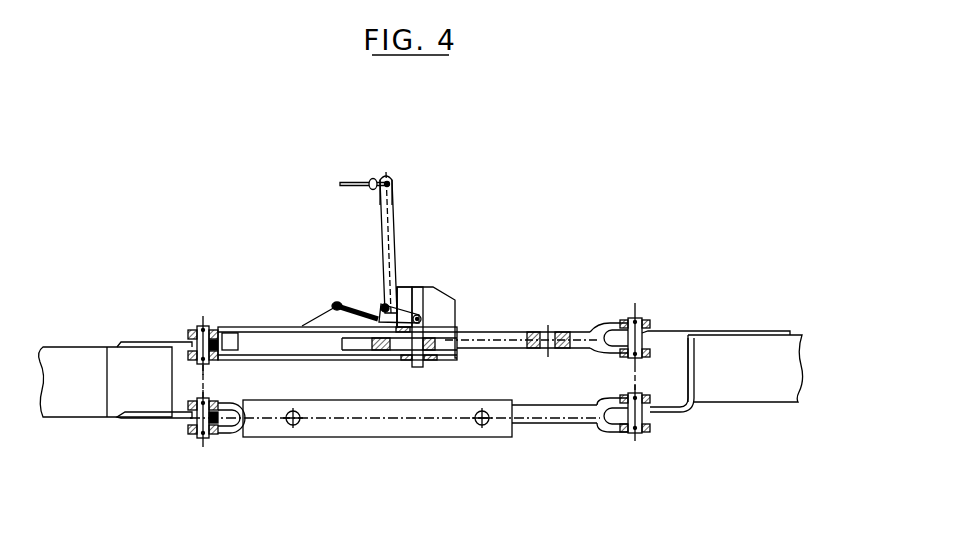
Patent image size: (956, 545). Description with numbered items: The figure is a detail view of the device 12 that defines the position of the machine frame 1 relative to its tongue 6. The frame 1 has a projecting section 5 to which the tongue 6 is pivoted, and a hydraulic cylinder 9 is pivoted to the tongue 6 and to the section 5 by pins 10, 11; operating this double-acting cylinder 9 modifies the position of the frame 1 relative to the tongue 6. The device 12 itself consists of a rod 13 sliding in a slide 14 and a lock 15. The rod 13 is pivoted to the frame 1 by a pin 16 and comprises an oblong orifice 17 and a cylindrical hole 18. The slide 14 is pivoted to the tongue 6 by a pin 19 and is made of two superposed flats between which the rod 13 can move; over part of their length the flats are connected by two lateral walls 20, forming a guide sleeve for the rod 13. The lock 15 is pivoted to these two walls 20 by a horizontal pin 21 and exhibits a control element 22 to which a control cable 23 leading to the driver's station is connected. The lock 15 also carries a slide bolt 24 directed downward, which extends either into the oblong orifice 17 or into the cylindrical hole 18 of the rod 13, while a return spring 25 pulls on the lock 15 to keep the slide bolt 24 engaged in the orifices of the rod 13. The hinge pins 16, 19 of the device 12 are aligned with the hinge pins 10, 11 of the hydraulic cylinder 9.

The frame 1 is at (711, 345).
The projecting section 5 is at (722, 329).
The tongue 6 is at (141, 346).
The hydraulic cylinder 9 is at (312, 425).
The pin 10 is at (198, 438).
The pin 11 is at (640, 433).
The device 12 is at (583, 330).
The rod 13 is at (510, 332).
The slide 14 is at (262, 327).
The lock 15 is at (398, 254).
The pin 16 is at (637, 317).
The oblong orifice 17 is at (398, 345).
The cylindrical hole 18 is at (548, 332).
The pin 19 is at (200, 325).
The lateral walls 20 is at (443, 303).
The horizontal pin 21 is at (385, 306).
The control element 22 is at (397, 200).
The control cable 23 is at (350, 183).
The slide bolt 24 is at (418, 288).
The return spring 25 is at (352, 305).